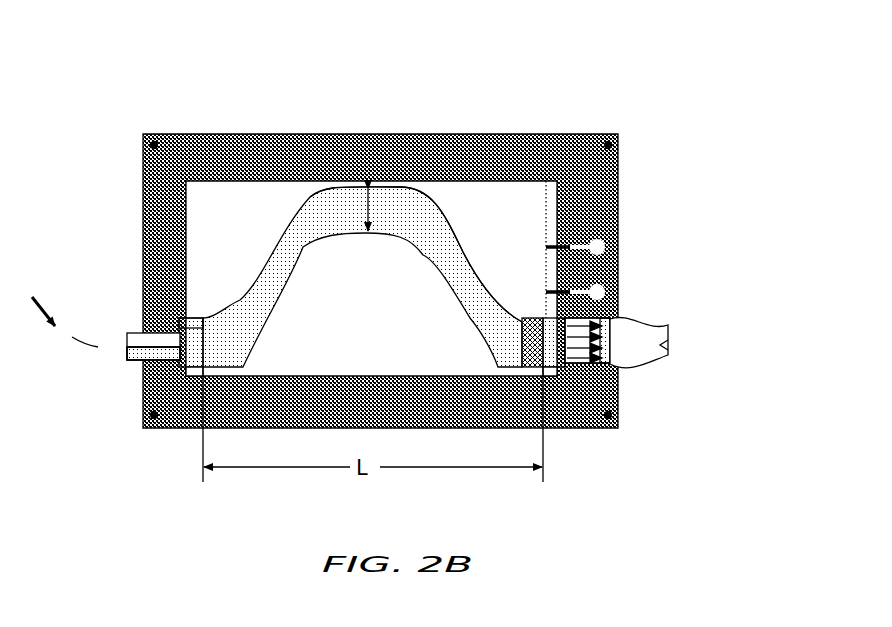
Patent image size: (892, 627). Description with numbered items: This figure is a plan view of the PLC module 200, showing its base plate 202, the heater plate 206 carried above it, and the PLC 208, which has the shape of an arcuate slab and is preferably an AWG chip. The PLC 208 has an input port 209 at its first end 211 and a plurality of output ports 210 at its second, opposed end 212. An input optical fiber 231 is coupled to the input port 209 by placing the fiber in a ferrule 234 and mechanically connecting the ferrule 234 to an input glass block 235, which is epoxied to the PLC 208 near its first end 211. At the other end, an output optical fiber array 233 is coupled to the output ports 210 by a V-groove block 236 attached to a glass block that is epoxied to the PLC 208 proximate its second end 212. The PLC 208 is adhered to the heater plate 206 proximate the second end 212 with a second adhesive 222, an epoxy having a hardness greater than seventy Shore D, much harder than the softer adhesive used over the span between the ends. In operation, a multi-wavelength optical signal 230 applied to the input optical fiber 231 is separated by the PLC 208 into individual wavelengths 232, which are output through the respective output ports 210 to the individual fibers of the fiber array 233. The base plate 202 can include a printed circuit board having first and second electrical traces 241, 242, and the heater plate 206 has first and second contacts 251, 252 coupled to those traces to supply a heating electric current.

The PLC module 200 is at (292, 47).
The base plate 202 is at (618, 208).
The heater plate 206 is at (362, 277).
The PLC 208 is at (386, 219).
The input port 209 is at (178, 333).
The output ports 210 is at (521, 324).
The first end 211 is at (215, 380).
The second end 212 is at (530, 380).
The second adhesive 222 is at (526, 352).
The multi-wavelength optical signal 230 is at (63, 305).
The input optical fiber 231 is at (127, 347).
The individual wavelengths 232 is at (582, 365).
The output optical fiber array 233 is at (668, 345).
The ferrule 234 is at (147, 354).
The input glass block 235 is at (192, 318).
The V-groove block 236 is at (600, 366).
The first electrical trace 241 is at (602, 246).
The second electrical trace 242 is at (602, 291).
The first contact 251 is at (546, 247).
The second contact 252 is at (548, 318).